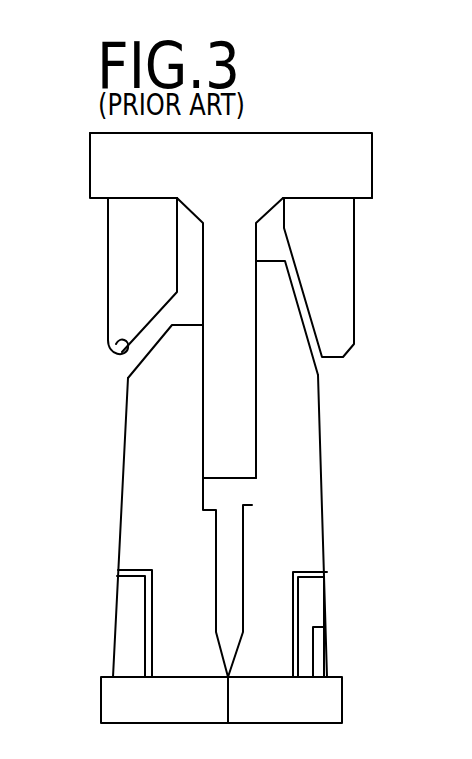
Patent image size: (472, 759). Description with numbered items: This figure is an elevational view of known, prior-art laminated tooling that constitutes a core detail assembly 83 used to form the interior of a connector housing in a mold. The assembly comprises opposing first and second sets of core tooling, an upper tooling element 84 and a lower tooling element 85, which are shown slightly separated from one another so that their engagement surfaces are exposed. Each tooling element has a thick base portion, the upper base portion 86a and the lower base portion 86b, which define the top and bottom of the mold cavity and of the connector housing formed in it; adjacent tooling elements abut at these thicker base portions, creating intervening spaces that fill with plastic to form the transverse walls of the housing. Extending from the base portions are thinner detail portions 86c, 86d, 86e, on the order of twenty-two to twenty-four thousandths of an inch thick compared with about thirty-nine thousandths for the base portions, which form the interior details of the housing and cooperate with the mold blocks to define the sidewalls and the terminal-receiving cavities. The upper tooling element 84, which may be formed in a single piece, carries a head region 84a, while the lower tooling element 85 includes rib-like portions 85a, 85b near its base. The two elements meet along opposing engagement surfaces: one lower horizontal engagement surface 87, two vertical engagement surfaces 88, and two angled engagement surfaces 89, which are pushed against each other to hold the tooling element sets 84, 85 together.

The core detail assembly 83 is at (381, 119).
The upper tooling element 84 is at (237, 181).
The blade head portion 84a is at (95, 165).
The lower tooling element 85 is at (150, 519).
The left housing rib 85a is at (136, 628).
The right housing rib 85b is at (312, 554).
The base portion 86a is at (337, 173).
The base portion 86b is at (180, 712).
The detail portion 86c is at (167, 239).
The detail portion 86d is at (252, 276).
The detail portion 86e is at (188, 454).
The lower horizontal engagement surface 87 is at (248, 505).
The vertical engagement surface 88 is at (203, 402).
The angled engagement surface 89 is at (140, 360).